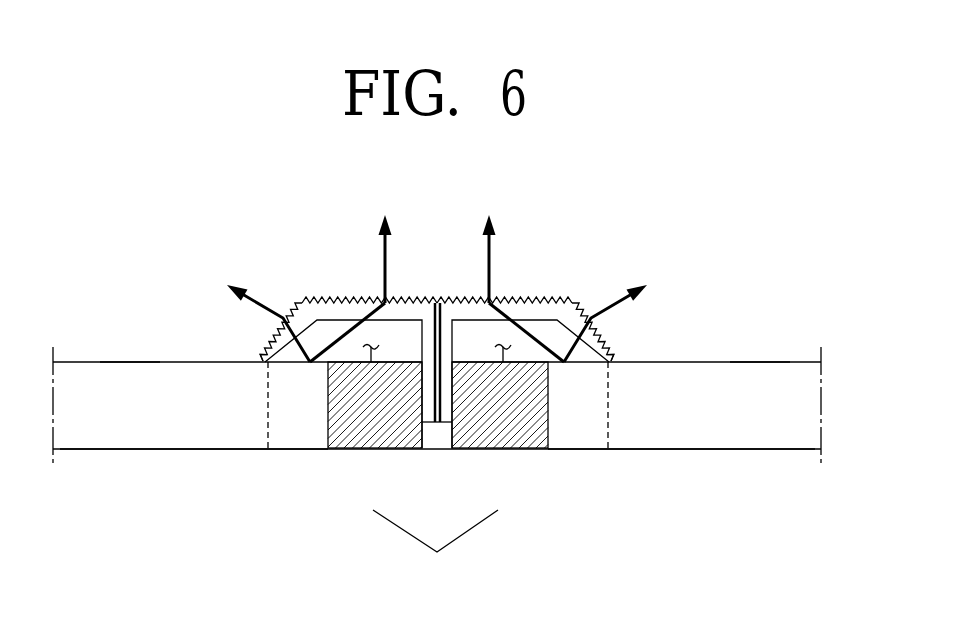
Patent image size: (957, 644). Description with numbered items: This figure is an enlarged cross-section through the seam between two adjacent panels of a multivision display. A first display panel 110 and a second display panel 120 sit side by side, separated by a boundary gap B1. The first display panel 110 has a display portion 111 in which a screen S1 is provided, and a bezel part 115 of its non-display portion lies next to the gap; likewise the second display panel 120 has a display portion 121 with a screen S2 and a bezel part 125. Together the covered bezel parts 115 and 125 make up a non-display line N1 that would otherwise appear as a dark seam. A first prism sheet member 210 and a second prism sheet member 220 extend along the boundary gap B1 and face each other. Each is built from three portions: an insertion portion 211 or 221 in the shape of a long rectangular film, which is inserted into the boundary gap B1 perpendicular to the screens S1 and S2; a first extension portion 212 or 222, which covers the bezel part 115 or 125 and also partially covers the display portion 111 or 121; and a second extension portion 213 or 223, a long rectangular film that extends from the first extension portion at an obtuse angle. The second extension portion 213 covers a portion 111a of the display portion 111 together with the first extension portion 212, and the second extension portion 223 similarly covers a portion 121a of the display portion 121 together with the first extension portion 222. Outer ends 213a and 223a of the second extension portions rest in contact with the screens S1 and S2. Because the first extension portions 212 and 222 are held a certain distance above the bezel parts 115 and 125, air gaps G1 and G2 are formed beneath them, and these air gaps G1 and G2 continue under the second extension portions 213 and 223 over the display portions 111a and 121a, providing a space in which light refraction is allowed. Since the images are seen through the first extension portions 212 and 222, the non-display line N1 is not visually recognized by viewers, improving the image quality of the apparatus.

The first display panel 110 is at (84, 357).
The display portion 111 is at (109, 435).
The portion of the display portion 111a is at (297, 435).
The part of the non-display portion 115 is at (380, 437).
The second display panel 120 is at (794, 357).
The display portion 121 is at (763, 435).
The portion of the display portion 121a is at (575, 435).
The part of the non-display portion 125 is at (497, 437).
The first prism sheet member 210 is at (298, 283).
The insertion portion 211 is at (430, 323).
The first extension portion 212 is at (343, 296).
The second extension portion 213 is at (262, 337).
The outer end 213a is at (261, 360).
The second prism sheet member 220 is at (576, 283).
The insertion portion 221 is at (443, 327).
The first extension portion 222 is at (533, 296).
The second extension portion 223 is at (614, 337).
The outer end 223a is at (613, 360).
The screen S1 is at (129, 360).
The screen S2 is at (758, 360).
The boundary gap B1 is at (446, 435).
The air gap G1 is at (371, 362).
The air gap G2 is at (503, 362).
The non-display line N1 is at (435, 548).